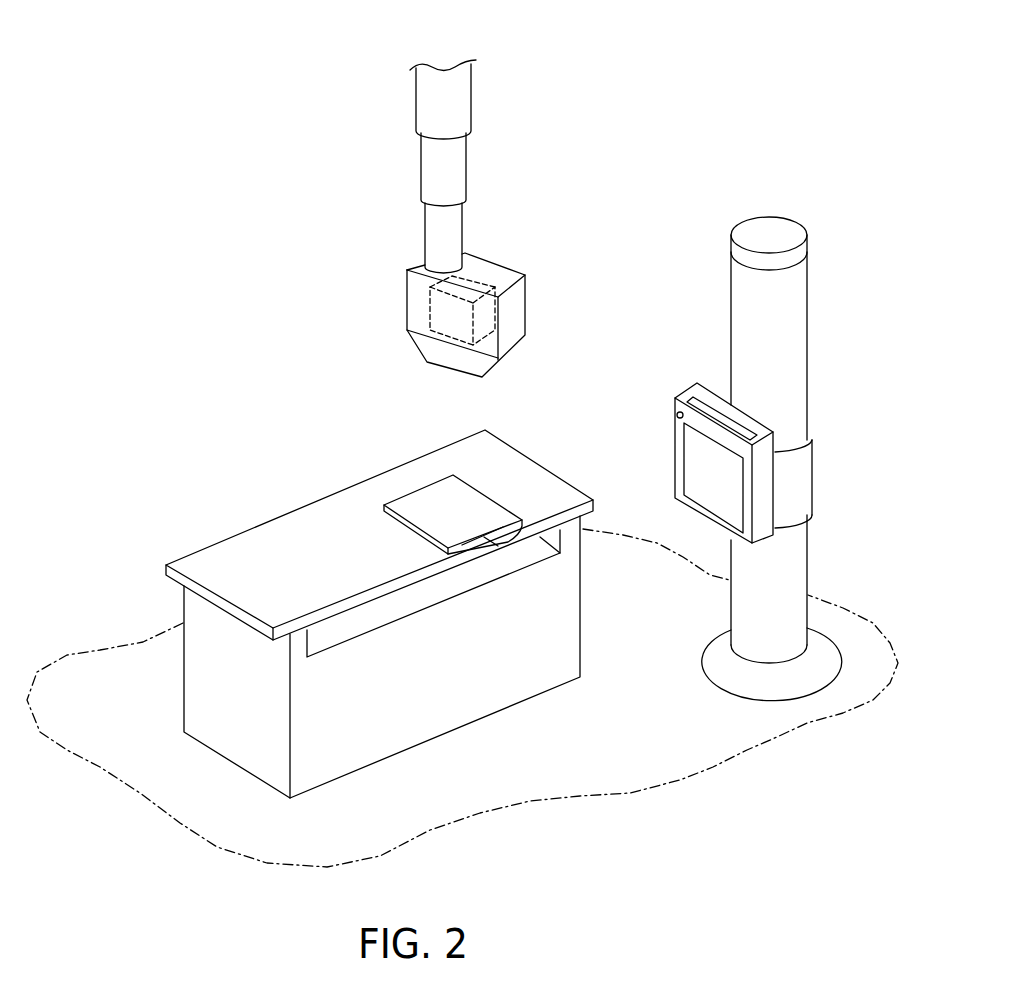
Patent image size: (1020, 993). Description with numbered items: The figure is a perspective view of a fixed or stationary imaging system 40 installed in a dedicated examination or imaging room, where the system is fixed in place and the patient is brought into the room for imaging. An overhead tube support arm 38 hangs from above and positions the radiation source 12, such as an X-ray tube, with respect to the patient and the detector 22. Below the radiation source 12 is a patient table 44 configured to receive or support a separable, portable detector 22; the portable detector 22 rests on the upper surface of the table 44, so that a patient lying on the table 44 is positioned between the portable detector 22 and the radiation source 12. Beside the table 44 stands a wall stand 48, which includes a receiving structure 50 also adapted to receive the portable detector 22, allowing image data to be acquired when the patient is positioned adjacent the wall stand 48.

The radiation source 12 is at (468, 273).
The portable detector 22 is at (420, 490).
The overhead tube support arm 38 is at (427, 113).
The imaging system 40 is at (640, 65).
The patient table 44 is at (470, 710).
The wall stand 48 is at (742, 312).
The receiving structure 50 is at (673, 437).